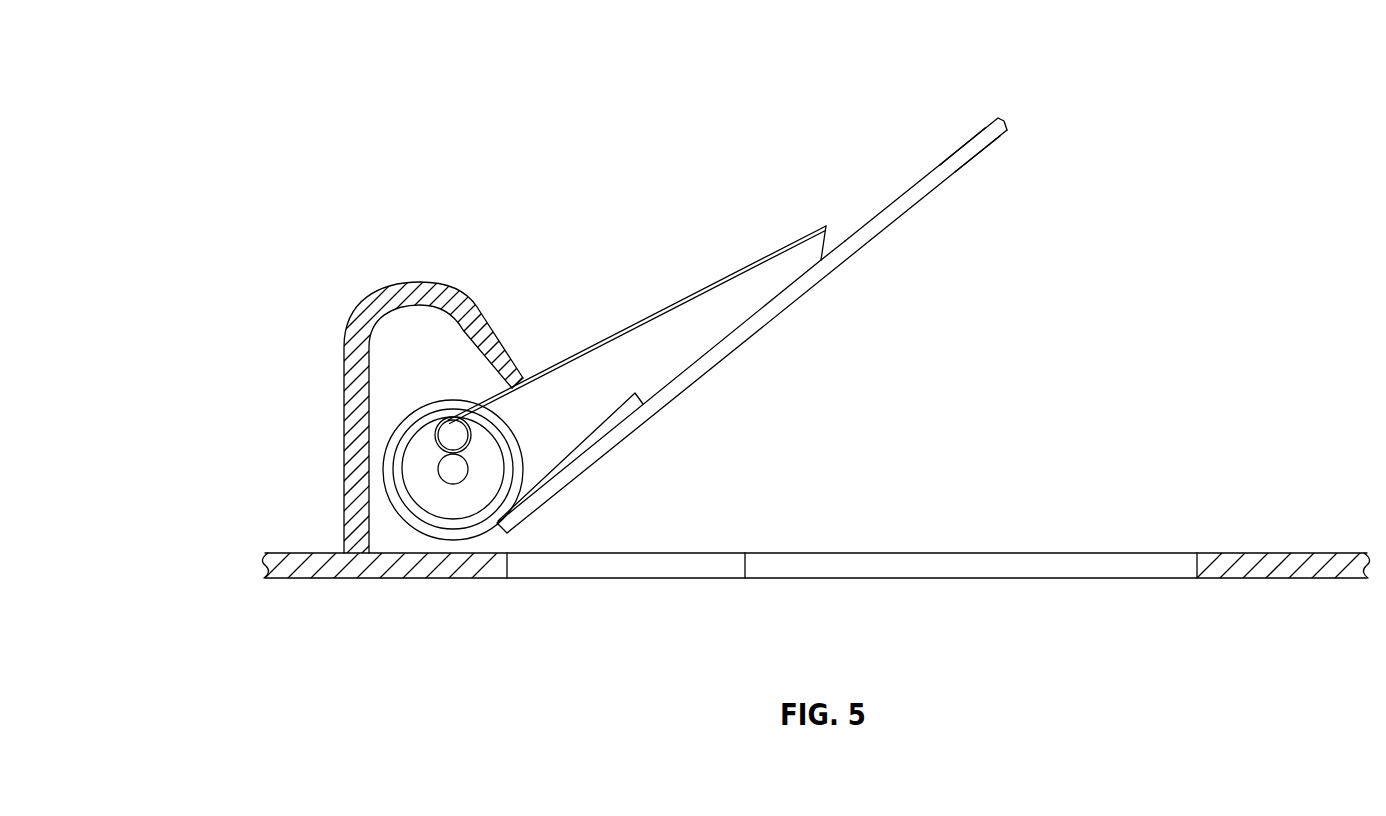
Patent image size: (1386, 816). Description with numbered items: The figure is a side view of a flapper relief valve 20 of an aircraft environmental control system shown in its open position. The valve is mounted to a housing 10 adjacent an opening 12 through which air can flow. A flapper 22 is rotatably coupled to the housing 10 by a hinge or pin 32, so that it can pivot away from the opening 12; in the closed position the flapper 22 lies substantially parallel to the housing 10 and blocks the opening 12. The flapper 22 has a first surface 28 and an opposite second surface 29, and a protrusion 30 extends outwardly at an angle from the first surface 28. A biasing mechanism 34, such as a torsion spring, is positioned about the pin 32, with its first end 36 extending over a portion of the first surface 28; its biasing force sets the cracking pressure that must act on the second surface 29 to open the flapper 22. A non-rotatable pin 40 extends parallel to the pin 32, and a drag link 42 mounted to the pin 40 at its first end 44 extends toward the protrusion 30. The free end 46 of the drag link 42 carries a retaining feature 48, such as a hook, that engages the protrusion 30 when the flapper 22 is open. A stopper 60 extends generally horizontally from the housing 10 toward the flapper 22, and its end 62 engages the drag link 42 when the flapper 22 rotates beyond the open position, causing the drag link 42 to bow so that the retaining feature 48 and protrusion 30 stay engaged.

The housing 10 is at (341, 578).
The opening 12 is at (1177, 568).
The flapper relief valve 20 is at (227, 209).
The flapper 22 is at (1000, 122).
The first surface 28 is at (965, 143).
The second surface 29 is at (980, 153).
The protrusion 30 is at (797, 278).
The pin 32 is at (452, 469).
The biasing mechanism 34 is at (392, 435).
The first end 36 is at (616, 416).
The non-rotatable pin 40 is at (450, 432).
The drag link 42 is at (650, 316).
The first end 44 is at (434, 428).
The free end 46 is at (815, 234).
The retaining feature 48 is at (831, 243).
The stopper 60 is at (394, 296).
The end 62 is at (517, 375).